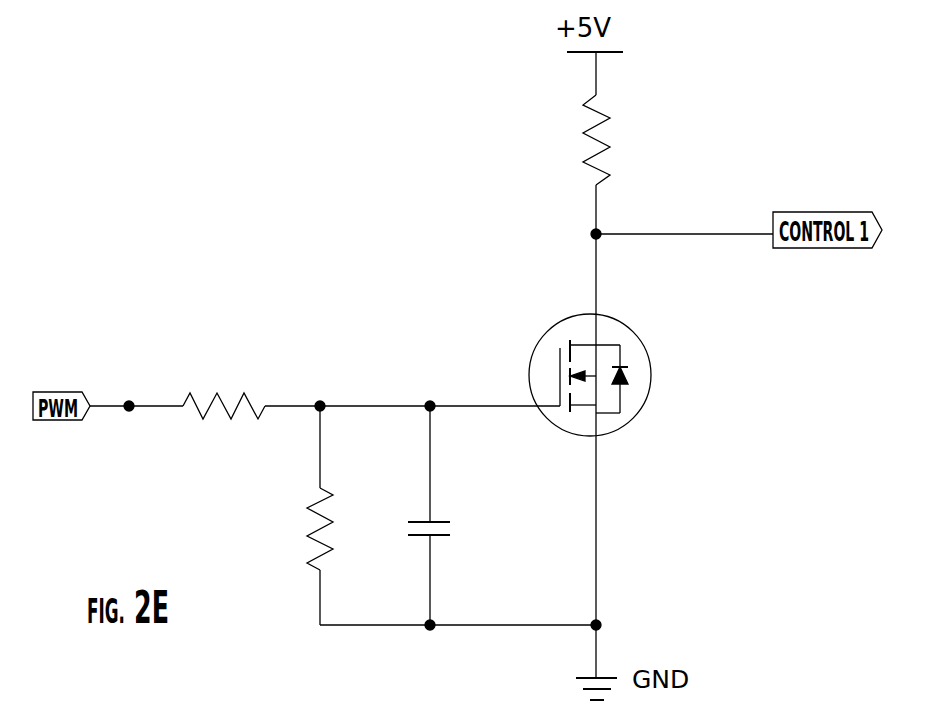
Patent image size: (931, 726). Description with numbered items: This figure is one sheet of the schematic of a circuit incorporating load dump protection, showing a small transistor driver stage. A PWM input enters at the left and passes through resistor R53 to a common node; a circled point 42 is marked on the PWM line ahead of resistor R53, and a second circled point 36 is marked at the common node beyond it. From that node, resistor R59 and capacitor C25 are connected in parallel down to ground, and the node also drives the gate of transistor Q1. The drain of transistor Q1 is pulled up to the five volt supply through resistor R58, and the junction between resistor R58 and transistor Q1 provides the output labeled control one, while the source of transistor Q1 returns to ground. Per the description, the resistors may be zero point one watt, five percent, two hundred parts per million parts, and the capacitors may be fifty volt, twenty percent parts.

The PWM input node 42 is at (129, 406).
The gate node of transistor Q1 36 is at (320, 406).
The resistor R53 (4.7K) R53 is at (224, 409).
The resistor R58 (1K) R58 is at (596, 140).
The resistor R59 (47K) R59 is at (287, 529).
The capacitor C25 (DNP) C25 is at (460, 513).
The transistor Q1 (2N7002) Q1 is at (640, 379).